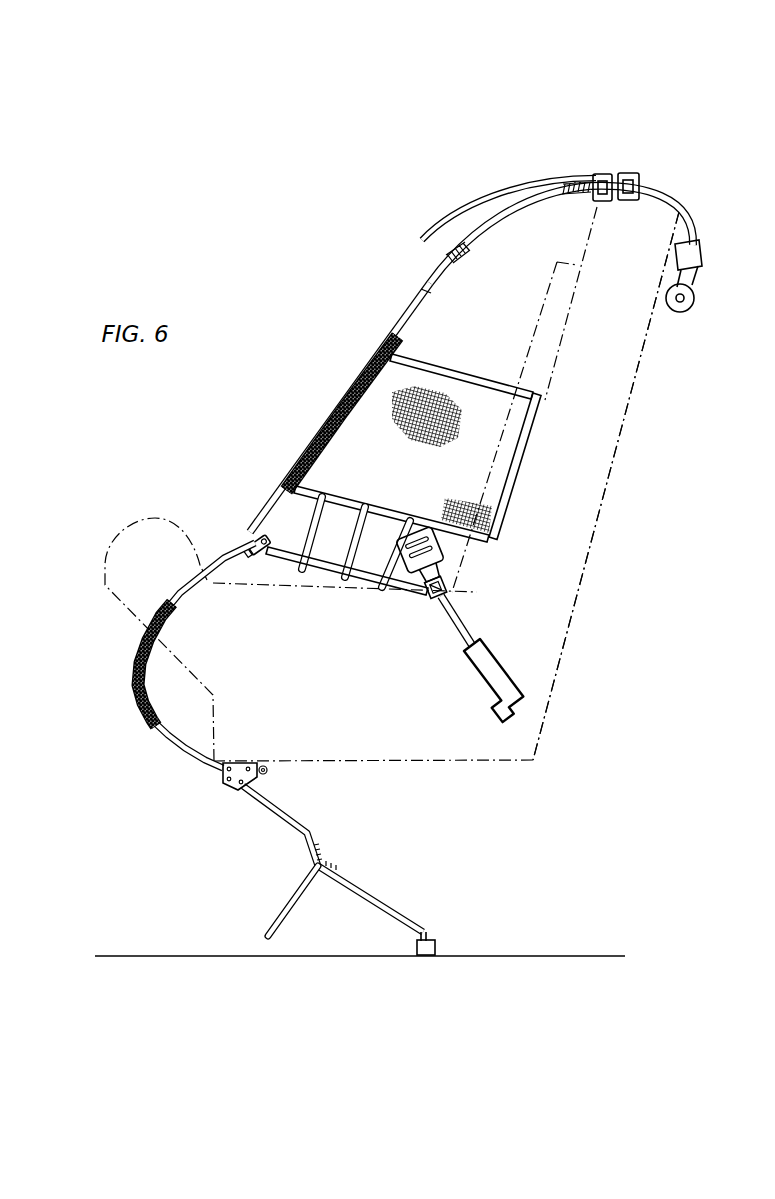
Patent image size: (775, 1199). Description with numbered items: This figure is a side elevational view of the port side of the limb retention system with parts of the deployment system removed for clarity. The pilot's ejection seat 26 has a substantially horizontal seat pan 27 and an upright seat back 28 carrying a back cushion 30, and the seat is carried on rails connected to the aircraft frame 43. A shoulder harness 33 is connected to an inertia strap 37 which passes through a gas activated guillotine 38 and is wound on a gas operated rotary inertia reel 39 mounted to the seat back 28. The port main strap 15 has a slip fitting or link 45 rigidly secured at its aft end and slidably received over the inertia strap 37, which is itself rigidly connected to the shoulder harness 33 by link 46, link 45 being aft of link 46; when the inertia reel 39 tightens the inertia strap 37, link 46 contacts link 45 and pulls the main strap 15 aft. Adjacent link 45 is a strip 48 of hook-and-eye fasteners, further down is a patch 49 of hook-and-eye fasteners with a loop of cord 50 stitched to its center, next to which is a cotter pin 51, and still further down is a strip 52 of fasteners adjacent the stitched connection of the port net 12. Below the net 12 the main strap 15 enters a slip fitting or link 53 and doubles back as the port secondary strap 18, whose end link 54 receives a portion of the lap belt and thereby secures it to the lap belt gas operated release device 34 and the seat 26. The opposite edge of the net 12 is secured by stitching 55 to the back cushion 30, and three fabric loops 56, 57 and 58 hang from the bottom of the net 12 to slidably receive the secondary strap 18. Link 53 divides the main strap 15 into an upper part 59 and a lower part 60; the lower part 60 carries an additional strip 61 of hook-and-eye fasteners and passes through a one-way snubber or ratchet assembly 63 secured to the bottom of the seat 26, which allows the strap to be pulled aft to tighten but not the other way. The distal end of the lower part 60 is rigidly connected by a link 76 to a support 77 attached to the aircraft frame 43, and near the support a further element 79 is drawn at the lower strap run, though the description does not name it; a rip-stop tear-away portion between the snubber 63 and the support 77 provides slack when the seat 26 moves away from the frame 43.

The port net 12 is at (465, 371).
The port main strap 15 is at (577, 199).
The port secondary strap 18 is at (365, 590).
The ejection seat 26 is at (576, 619).
The seat pan 27 is at (386, 686).
The seat back 28 is at (596, 410).
The back cushion 30 is at (527, 338).
The shoulder harness 33 is at (484, 191).
The lap belt gas operated release device 34 is at (481, 670).
The inertia strap 37 is at (688, 205).
The gas activated guillotine 38 is at (704, 246).
The rotary inertia reel 39 is at (698, 291).
The aircraft frame 43 is at (535, 953).
The slip fitting or link 45 is at (630, 174).
The link 46 is at (608, 175).
The strip of hook-and-eye fasteners 48 is at (598, 205).
The patch of hook-and-eye fasteners 49 is at (454, 253).
The loop of cord 50 is at (462, 258).
The cotter pin 51 is at (428, 291).
The strip of hook-and-eye fasteners 52 is at (363, 372).
The slip fitting or link 53 is at (250, 532).
The link 54 is at (429, 598).
The stitching 55 is at (516, 462).
The fabric loop 56 is at (304, 498).
The fabric loop 57 is at (351, 498).
The fabric loop 58 is at (384, 545).
The upper part of main strap 59 is at (302, 456).
The lower part of main strap 60 is at (223, 549).
The strip of hook-and-eye fasteners 61 is at (154, 670).
The one-way snubber or ratchet assembly 63 is at (236, 792).
The link 76 is at (423, 932).
The support 77 is at (437, 942).
The support leg 79 is at (299, 904).